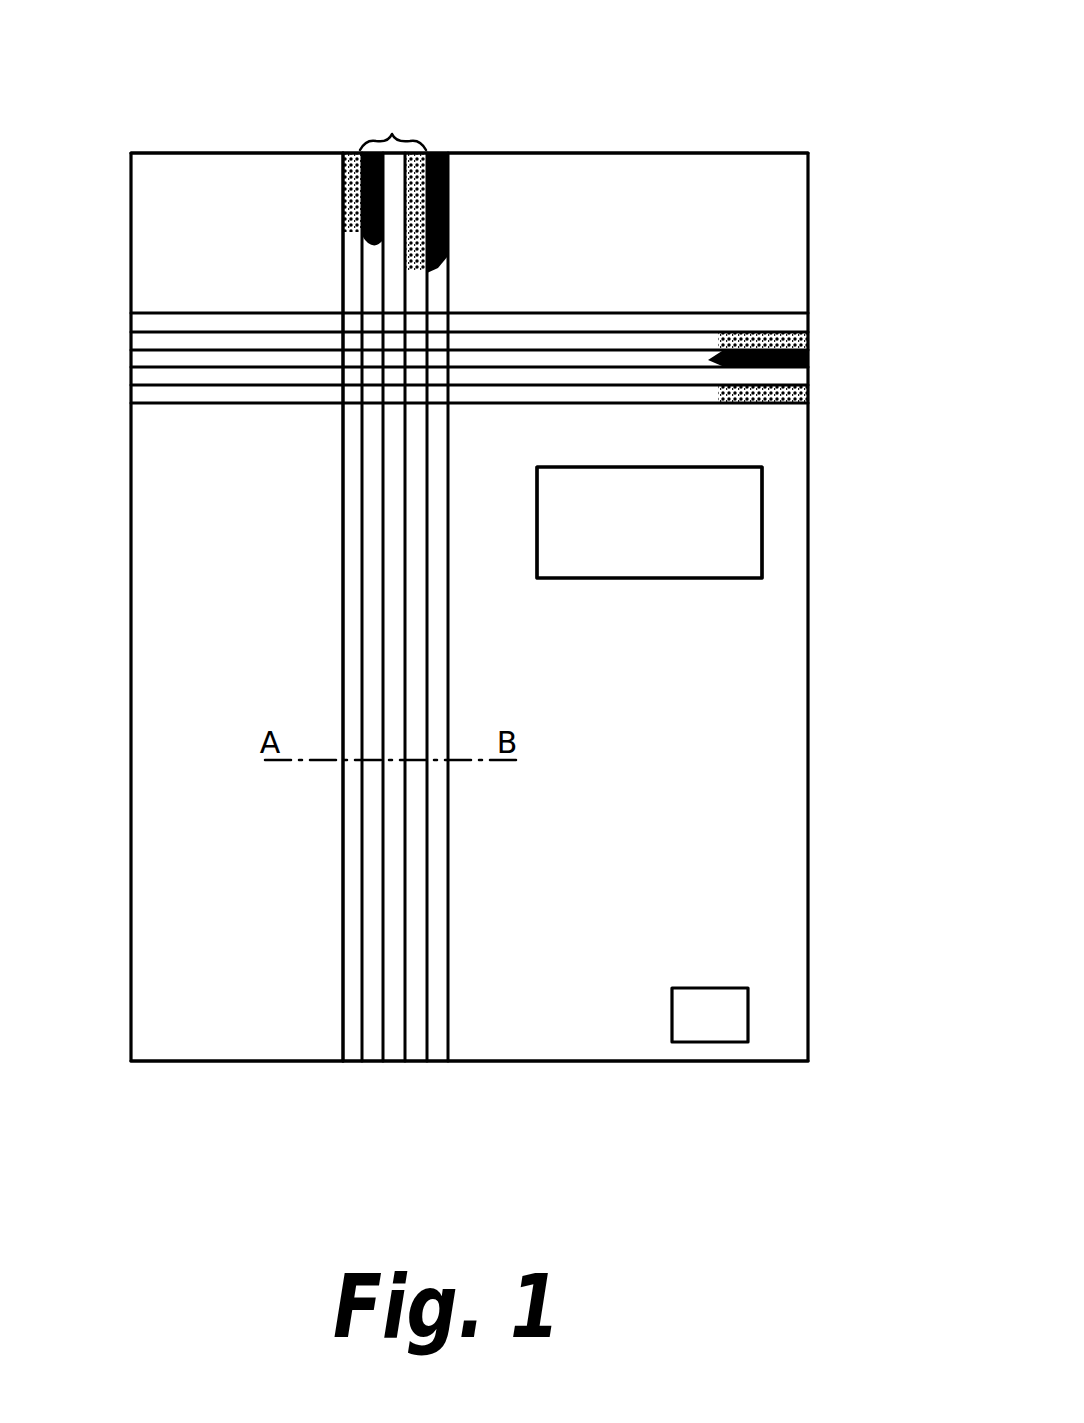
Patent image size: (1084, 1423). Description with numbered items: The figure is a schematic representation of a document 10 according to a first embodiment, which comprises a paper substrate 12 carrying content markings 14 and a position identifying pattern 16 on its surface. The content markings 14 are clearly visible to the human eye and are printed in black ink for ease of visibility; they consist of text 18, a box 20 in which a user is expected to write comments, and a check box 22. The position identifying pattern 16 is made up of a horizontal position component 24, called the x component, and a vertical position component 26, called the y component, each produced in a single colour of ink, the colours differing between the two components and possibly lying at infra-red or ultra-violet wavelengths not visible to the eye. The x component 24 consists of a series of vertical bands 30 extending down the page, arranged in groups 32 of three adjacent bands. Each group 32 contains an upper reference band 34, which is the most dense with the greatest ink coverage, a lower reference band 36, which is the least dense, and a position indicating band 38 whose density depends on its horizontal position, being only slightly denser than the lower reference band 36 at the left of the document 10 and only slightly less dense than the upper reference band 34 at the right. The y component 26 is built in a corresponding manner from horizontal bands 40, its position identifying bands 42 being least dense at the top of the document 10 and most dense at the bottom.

The document 10 is at (191, 1082).
The paper substrate 12 is at (262, 1063).
The content markings 14 is at (767, 521).
The position identifying pattern 16 is at (288, 215).
The text 18 is at (664, 162).
The box 20 is at (762, 488).
The check box 22 is at (750, 1018).
The horizontal position component 24 is at (343, 478).
The vertical position component 26 is at (765, 312).
The vertical bands 30 is at (349, 152).
The groups 32 is at (394, 133).
The upper reference band 34 is at (448, 190).
The lower reference band 36 is at (425, 153).
The position indicating band 38 is at (340, 200).
The horizontal bands 40 is at (810, 356).
The position identifying bands 42 is at (808, 328).